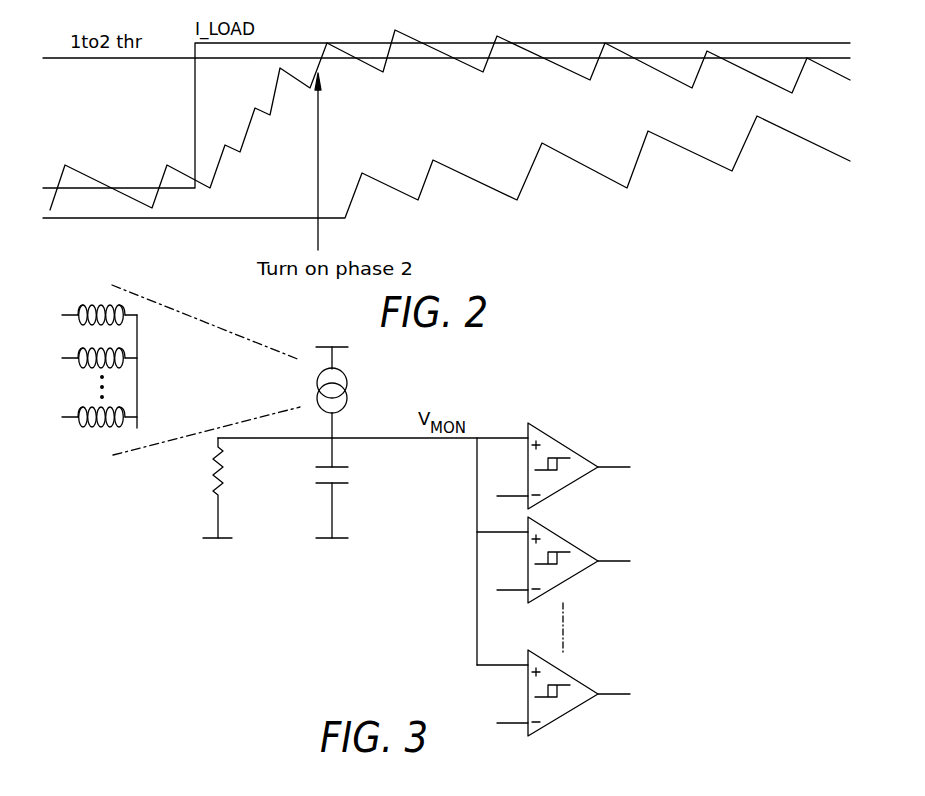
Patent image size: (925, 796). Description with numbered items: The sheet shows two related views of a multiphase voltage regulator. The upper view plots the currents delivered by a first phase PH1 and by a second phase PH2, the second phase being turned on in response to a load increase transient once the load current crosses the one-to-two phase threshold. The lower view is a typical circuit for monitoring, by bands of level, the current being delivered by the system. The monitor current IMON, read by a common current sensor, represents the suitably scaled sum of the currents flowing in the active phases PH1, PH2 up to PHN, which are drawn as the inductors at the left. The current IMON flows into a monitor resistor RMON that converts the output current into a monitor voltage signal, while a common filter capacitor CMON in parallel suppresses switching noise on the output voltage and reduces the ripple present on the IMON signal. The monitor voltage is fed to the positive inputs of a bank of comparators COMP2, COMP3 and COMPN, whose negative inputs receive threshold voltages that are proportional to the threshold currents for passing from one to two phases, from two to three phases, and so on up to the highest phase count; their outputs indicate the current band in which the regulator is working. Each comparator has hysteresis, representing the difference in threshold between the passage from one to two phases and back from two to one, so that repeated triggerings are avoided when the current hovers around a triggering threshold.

In FIG. 2, the first phase PH1 is at (450, 120).
In FIG. 3, the first phase PH1 is at (87, 305).
In FIG. 2, the second phase PH2 is at (446, 167).
In FIG. 3, the second phase PH2 is at (87, 345).
In FIG. 3, the Nth phase PHN is at (87, 406).
In FIG. 3, the monitor current IMON is at (303, 392).
In FIG. 3, the monitor resistor RMON is at (190, 488).
In FIG. 3, the filter capacitor CMON is at (303, 488).
In FIG. 3, the comparator COMP2 is at (562, 445).
In FIG. 3, the comparator COMP3 is at (562, 537).
In FIG. 3, the comparator COMPN is at (562, 670).